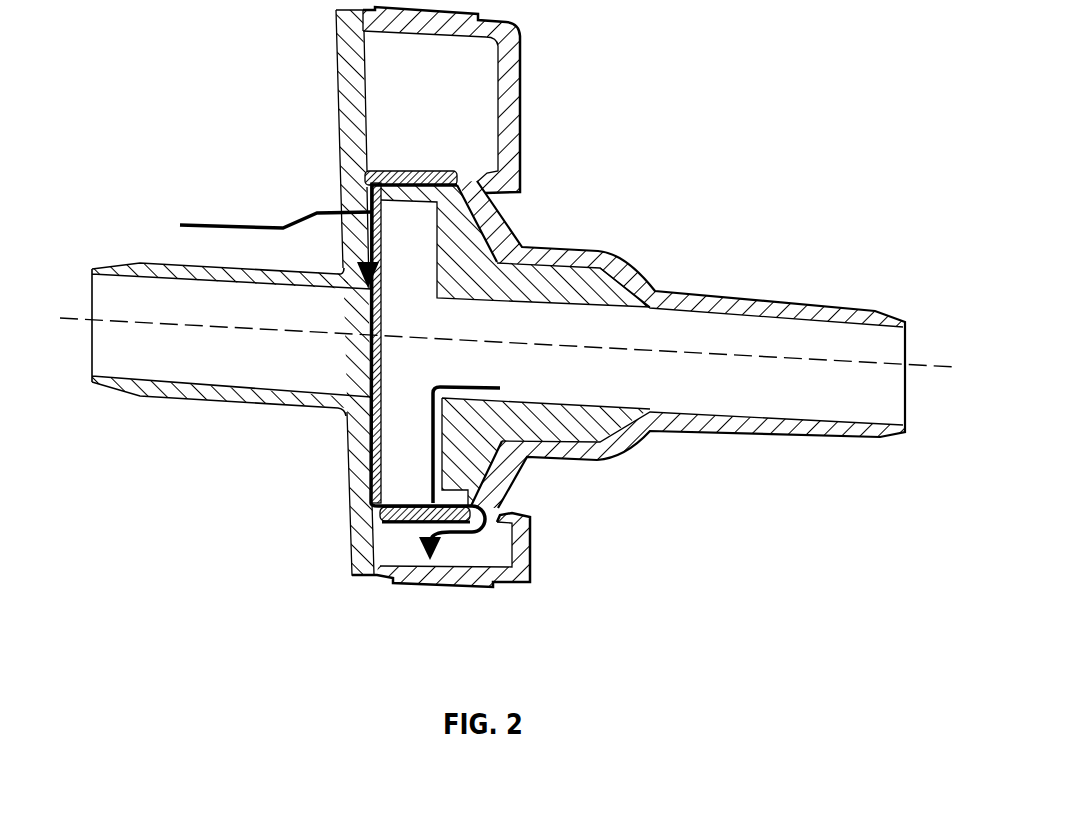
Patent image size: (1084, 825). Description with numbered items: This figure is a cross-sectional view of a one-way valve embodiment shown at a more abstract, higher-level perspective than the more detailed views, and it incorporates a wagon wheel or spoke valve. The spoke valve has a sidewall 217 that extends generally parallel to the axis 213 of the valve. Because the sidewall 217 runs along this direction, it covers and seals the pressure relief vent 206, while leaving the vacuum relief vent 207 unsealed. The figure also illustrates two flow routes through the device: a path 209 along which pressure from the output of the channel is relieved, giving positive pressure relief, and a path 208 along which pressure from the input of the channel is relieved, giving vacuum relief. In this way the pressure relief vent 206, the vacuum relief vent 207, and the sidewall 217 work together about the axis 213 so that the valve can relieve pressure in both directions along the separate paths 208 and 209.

The pressure relief vent 206 is at (395, 506).
The vacuum relief vent 207 is at (365, 210).
The path 208 is at (204, 224).
The path 209 is at (440, 545).
The axis 213 is at (88, 320).
The sidewall 217 is at (397, 508).